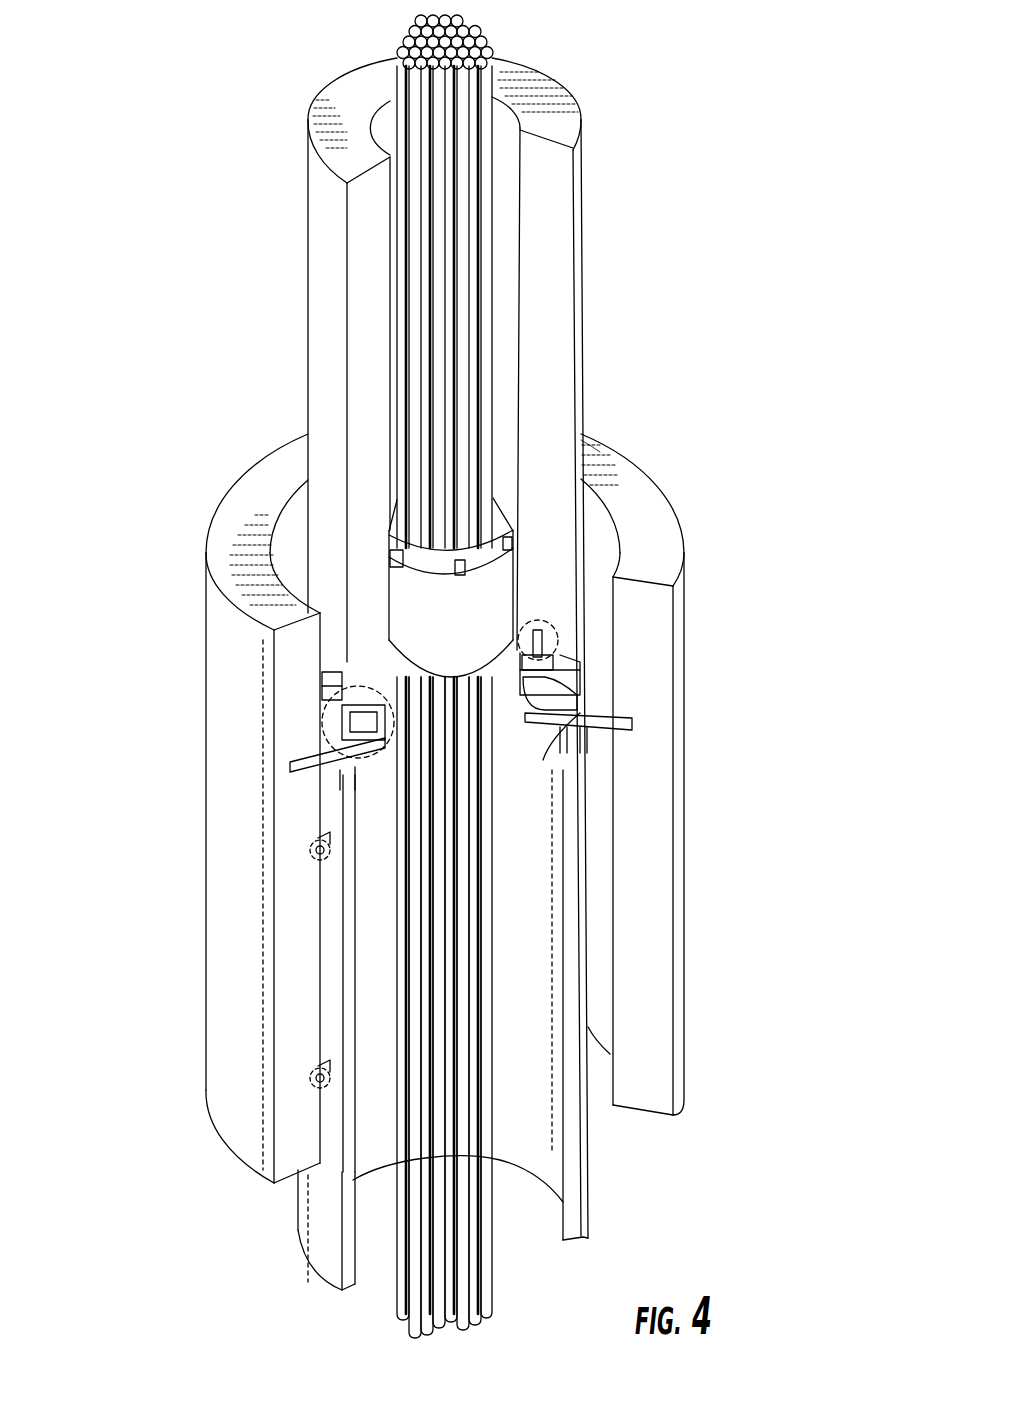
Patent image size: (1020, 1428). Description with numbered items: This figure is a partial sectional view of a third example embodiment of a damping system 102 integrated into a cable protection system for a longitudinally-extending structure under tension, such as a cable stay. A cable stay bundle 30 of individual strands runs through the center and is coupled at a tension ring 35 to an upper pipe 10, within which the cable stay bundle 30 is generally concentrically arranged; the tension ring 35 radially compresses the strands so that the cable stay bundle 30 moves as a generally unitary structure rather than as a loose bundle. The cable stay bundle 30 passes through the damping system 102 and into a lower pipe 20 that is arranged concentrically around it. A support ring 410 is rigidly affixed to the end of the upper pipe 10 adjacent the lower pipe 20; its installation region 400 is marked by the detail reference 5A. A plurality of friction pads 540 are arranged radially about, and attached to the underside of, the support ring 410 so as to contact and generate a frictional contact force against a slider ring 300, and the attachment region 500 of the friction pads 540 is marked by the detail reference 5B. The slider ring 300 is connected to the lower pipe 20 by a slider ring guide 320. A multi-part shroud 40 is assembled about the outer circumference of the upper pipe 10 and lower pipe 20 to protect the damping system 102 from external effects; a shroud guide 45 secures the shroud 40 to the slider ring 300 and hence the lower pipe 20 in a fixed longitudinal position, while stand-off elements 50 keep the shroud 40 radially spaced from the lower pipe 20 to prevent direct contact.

The upper pipe 10 is at (553, 242).
The lower pipe 20 is at (298, 1215).
The cable stay bundle 30 is at (500, 182).
The tension ring 35 is at (493, 577).
The shroud 40 is at (253, 488).
The shroud guide 45 is at (330, 752).
The stand-off elements 50 is at (320, 838).
The damping system 102 is at (602, 560).
The slider ring 300 is at (573, 680).
The slider ring guide 320 is at (590, 735).
The installation region 400 is at (566, 630).
The support ring 410 is at (578, 668).
The attachment region 500 is at (290, 716).
The friction pads 540 is at (540, 740).
The detail view reference 5A is at (540, 626).
The detail view reference 5B is at (362, 762).